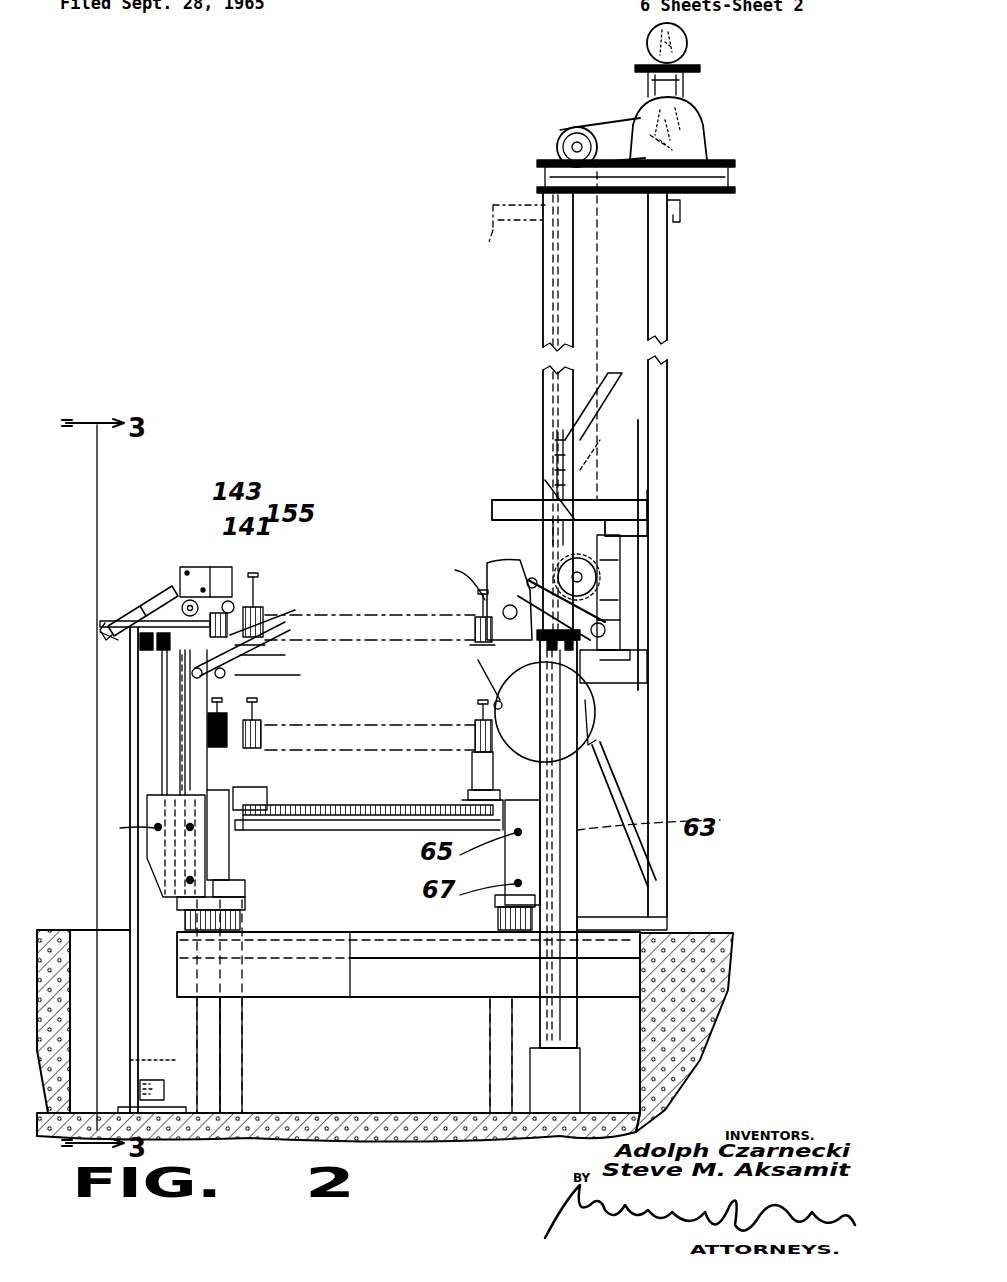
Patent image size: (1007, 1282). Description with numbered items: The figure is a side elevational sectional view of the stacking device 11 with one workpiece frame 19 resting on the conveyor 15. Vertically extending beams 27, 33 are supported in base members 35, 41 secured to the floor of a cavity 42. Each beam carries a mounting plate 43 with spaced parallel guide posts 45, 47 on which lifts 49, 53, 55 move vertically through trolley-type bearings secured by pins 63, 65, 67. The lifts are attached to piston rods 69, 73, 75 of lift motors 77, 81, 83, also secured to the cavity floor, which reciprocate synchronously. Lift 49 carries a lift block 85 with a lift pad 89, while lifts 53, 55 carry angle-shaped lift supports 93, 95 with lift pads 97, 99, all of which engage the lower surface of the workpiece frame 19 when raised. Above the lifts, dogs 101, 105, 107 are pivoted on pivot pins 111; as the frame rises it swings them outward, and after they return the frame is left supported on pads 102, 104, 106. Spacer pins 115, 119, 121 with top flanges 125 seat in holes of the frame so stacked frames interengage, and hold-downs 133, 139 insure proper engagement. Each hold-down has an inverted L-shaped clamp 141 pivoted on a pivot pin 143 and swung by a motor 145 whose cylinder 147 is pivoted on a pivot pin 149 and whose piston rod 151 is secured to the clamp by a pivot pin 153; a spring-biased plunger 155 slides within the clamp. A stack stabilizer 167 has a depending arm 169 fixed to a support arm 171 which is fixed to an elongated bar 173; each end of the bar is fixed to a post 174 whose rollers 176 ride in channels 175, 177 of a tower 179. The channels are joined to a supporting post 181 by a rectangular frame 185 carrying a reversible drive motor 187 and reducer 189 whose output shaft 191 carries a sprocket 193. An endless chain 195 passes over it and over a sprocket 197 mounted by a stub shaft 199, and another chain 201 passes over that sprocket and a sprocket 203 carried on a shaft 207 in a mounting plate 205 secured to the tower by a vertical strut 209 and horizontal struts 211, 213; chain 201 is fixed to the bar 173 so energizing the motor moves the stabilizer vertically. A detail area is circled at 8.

The detail circle 8 is at (590, 698).
The stacking device 11 is at (355, 282).
The conveyor 15 is at (365, 799).
The workpiece frame 19 is at (342, 735).
The beam 27 is at (128, 906).
The beam 33 is at (565, 977).
The base member 35 is at (124, 1062).
The base member 41 is at (565, 1077).
The cavity 42 is at (630, 998).
The mounting plate 43 is at (162, 706).
The guide post 45 is at (180, 738).
The guide post 47 is at (185, 760).
The lift 49 is at (150, 862).
The lift 53 is at (218, 846).
The lift 55 is at (505, 862).
The pin 63 is at (111, 829).
The pin 65 is at (188, 825).
The pin 67 is at (195, 880).
The piston rod 69 is at (240, 920).
The piston rod 73 is at (240, 905).
The piston rod 75 is at (495, 910).
The lift motor 77 is at (232, 1038).
The lift motor 81 is at (254, 1071).
The lift motor 83 is at (482, 1041).
The lift block 85 is at (262, 780).
The lift pad 89 is at (218, 790).
The lift support 93 is at (260, 810).
The lift support 95 is at (462, 800).
The lift pad 97 is at (300, 800).
The lift pad 99 is at (470, 790).
The dog 101 is at (300, 675).
The pad 102 is at (270, 622).
The pad 104 is at (265, 645).
The dog 105 is at (285, 655).
The pad 106 is at (470, 648).
The dog 107 is at (478, 670).
The pivot pin 111 is at (280, 700).
The pin 115 is at (290, 735).
The pin 119 is at (295, 710).
The pin 121 is at (478, 715).
The top flange 125 is at (270, 560).
The hold-down 133 is at (169, 552).
The hold-down 139 is at (533, 552).
The clamp 141 is at (495, 565).
The pivot pin 143 is at (505, 597).
The motor 145 is at (613, 667).
The cylinder 147 is at (108, 618).
The pivot pin 149 is at (102, 637).
The piston rod 151 is at (175, 572).
The pivot pin 153 is at (182, 562).
The plunger 155 is at (450, 568).
The stack stabilizer 167 is at (480, 492).
The depending arm 169 is at (492, 507).
The support arm 171 is at (530, 485).
The bar 173 is at (585, 525).
The post 174 is at (555, 450).
The channel 175 is at (573, 302).
The roller 176 is at (590, 460).
The channel 177 is at (575, 382).
The tower 179 is at (533, 287).
The supporting post 181 is at (668, 565).
The frame 185 is at (730, 172).
The drive motor 187 is at (685, 40).
The reducer 189 is at (690, 100).
The output shaft 191 is at (705, 70).
The sprocket 193 is at (690, 140).
The chain 195 is at (610, 125).
The sprocket 197 is at (560, 145).
The stub shaft 199 is at (578, 100).
The chain 201 is at (630, 497).
The sprocket 203 is at (590, 570).
The mounting plate 205 is at (615, 590).
The shaft 207 is at (622, 560).
The vertical strut 209 is at (620, 617).
The horizontal strut 211 is at (640, 515).
The horizontal strut 213 is at (625, 650).